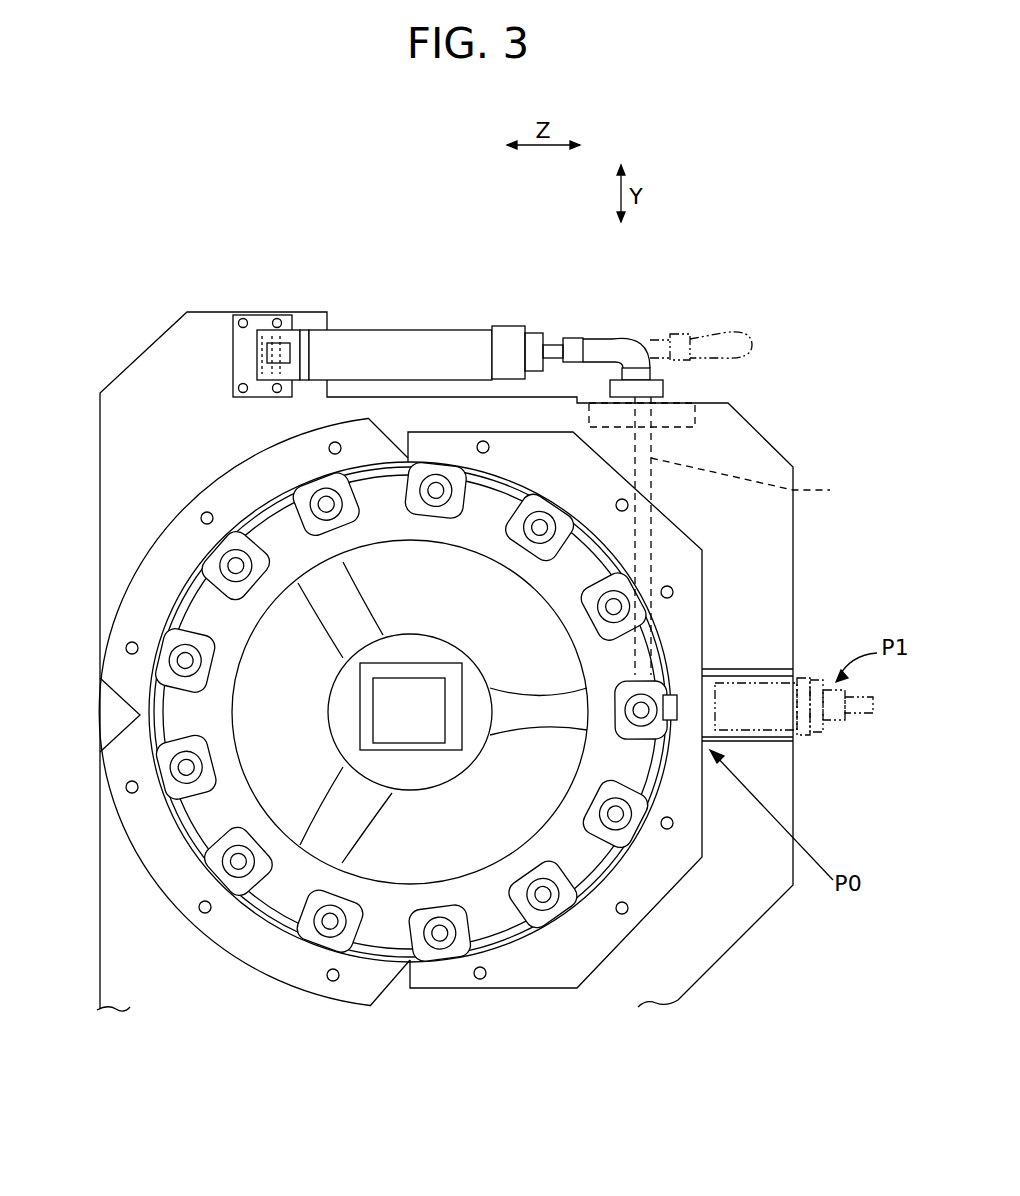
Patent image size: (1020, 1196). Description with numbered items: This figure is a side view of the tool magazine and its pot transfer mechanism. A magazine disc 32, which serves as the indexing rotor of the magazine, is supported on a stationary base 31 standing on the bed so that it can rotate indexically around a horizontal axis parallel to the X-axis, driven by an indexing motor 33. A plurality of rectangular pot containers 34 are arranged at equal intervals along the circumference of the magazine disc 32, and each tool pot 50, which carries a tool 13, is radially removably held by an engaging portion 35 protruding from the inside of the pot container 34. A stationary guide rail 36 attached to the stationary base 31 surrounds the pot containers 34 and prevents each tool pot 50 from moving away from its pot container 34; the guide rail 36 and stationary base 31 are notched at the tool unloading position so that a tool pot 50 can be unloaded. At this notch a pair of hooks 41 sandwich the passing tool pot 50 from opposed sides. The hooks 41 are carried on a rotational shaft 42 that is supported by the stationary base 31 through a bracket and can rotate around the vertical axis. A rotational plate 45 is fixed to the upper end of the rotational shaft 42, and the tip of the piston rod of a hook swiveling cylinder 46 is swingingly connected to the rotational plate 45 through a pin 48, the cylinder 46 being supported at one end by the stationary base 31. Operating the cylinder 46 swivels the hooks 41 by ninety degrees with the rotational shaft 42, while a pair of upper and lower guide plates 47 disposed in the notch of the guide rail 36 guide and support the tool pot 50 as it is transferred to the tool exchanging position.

The tool 13 is at (328, 921).
The stationary base 31 is at (165, 355).
The magazine disc 32 is at (208, 620).
The indexing motor 33 is at (385, 722).
The pot container 34 is at (290, 932).
The engaging portion 35 is at (267, 927).
The stationary guide rail 36 is at (690, 560).
The hooks 41 is at (678, 714).
The rotational shaft 42 is at (724, 536).
The rotational plate 45 is at (653, 388).
The hook swiveling cylinder 46 is at (400, 352).
The guide plates 47 is at (773, 670).
The pin 48 is at (650, 350).
The tool pot 50 is at (812, 731).